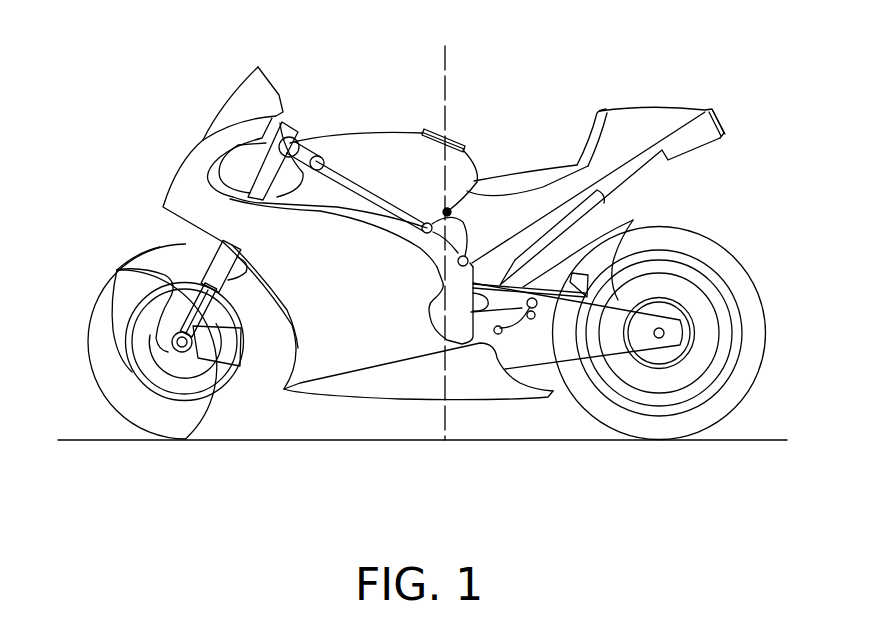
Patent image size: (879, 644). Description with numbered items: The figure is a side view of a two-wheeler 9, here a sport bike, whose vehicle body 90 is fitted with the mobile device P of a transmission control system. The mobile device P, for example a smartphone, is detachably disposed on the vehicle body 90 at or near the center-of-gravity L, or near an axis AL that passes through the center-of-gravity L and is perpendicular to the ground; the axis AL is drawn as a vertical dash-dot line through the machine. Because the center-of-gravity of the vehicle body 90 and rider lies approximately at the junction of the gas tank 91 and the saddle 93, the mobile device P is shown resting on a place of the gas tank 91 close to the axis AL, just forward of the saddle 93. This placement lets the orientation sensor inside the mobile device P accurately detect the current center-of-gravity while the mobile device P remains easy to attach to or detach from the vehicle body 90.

The two-wheeler 9 is at (695, 93).
The vehicle body 90 is at (262, 236).
The gas tank 91 is at (380, 150).
The saddle 93 is at (530, 182).
The mobile device P is at (458, 144).
The center-of-gravity L is at (443, 210).
The axis AL is at (449, 60).